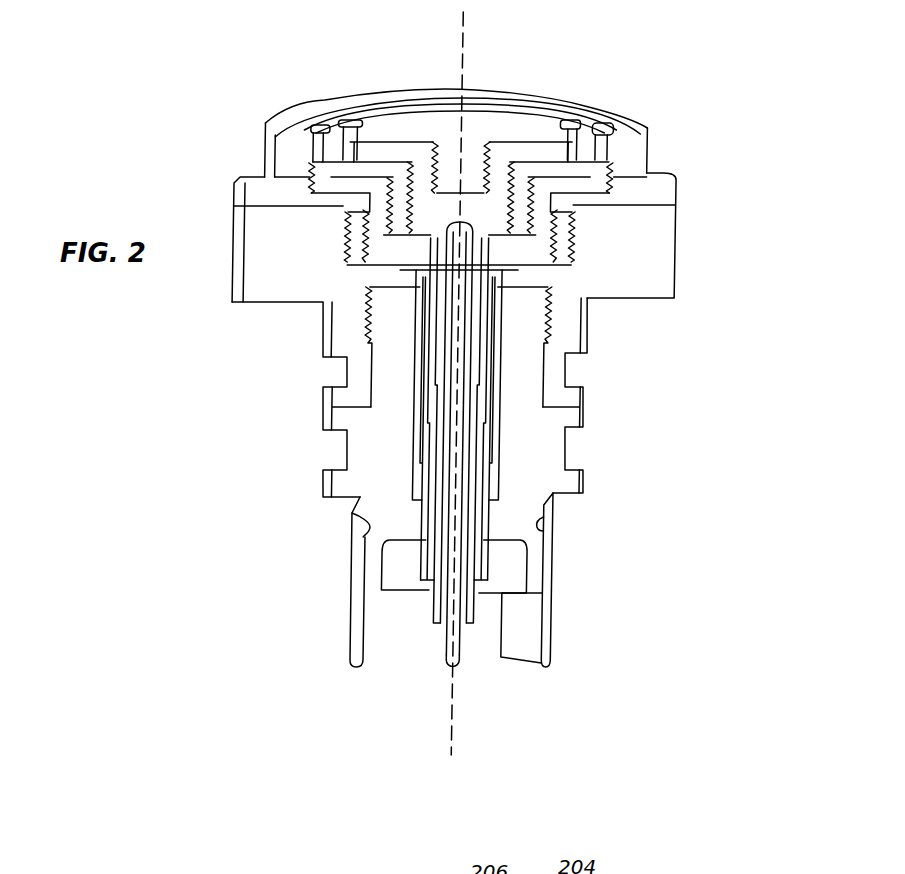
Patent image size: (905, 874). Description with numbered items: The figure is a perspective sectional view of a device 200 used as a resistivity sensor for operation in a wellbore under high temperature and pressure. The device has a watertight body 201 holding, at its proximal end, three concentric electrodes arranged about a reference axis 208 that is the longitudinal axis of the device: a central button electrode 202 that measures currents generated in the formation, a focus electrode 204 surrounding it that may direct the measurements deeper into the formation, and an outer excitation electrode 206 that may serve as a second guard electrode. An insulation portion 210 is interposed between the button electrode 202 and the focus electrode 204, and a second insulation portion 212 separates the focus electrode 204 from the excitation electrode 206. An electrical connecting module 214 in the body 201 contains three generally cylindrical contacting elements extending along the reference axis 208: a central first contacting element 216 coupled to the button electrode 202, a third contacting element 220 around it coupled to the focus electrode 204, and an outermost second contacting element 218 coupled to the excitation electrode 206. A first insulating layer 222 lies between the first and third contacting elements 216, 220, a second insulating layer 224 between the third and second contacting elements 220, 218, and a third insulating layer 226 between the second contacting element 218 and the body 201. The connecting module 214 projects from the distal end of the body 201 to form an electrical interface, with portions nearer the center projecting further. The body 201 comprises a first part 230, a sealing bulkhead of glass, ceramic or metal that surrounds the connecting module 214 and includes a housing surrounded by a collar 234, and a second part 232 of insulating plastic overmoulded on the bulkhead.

The device 200 is at (698, 128).
The body 201 is at (236, 310).
The button electrode 202 is at (440, 128).
The focus electrode 204 is at (592, 126).
The excitation electrode 206 is at (630, 137).
The reference axis 208 is at (449, 730).
The insulation portion 210 is at (381, 156).
The insulation portion 212 is at (529, 244).
The electrical connecting module 214 is at (467, 476).
The first contacting element 216 is at (464, 657).
The second contacting element 218 is at (531, 568).
The third contacting element 220 is at (535, 614).
The first insulating layer 222 is at (442, 626).
The second insulating layer 224 is at (440, 590).
The third insulating layer 226 is at (418, 545).
The first part 230 is at (388, 432).
The second part 232 is at (648, 278).
The collar 234 is at (546, 652).